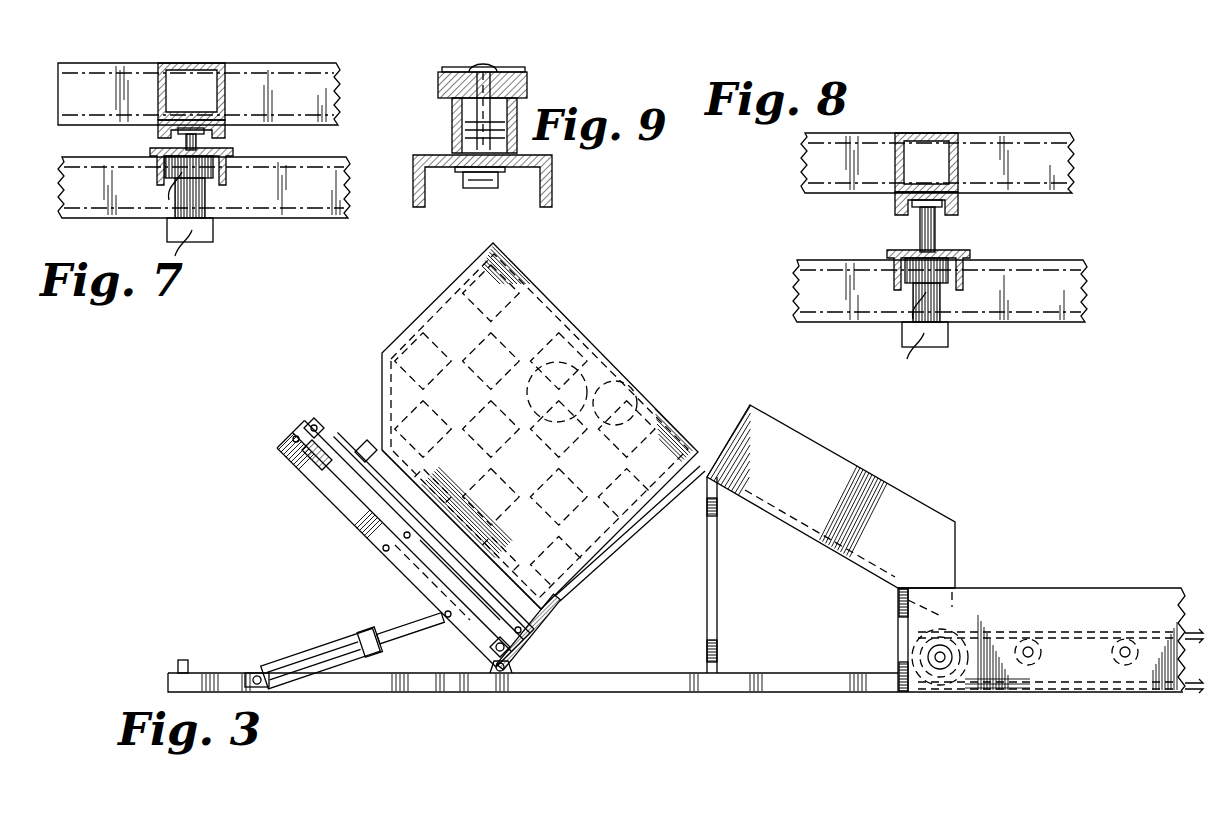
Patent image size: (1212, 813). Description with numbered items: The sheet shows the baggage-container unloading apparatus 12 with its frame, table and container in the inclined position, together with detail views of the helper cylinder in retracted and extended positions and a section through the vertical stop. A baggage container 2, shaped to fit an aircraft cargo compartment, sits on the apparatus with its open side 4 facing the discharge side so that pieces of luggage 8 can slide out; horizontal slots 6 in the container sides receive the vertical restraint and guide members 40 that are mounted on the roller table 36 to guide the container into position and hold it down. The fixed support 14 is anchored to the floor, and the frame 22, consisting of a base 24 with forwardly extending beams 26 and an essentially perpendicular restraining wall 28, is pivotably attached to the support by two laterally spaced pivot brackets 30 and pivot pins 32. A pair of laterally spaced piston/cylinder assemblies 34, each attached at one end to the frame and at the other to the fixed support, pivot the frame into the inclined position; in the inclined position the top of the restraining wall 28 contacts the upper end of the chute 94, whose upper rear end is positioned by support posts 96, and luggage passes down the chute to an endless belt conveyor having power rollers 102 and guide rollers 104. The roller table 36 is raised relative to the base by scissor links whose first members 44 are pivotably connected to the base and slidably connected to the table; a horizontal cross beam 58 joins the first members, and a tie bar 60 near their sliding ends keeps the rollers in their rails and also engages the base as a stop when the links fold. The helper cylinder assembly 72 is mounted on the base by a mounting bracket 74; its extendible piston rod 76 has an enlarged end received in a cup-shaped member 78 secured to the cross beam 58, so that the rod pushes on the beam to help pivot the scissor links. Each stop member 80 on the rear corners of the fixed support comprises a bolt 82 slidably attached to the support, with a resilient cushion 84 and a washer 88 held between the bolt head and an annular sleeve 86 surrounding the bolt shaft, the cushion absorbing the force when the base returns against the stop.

In FIG. 3, the baggage container 2 is at (560, 307).
In FIG. 3, the open side 4 is at (701, 455).
In FIG. 3, the horizontal slots 6 is at (560, 593).
In FIG. 3, the pieces of luggage 8 is at (380, 355).
In FIG. 3, the unloading apparatus 12 is at (190, 522).
In FIG. 9, the fixed support 14 is at (552, 175).
In FIG. 3, the fixed support 14 is at (362, 682).
In FIG. 3, the frame 22 is at (464, 564).
In FIG. 3, the base 24 is at (320, 480).
In FIG. 7, the beams 26 is at (316, 218).
In FIG. 8, the beams 26 is at (1040, 322).
In FIG. 3, the restraining wall 28 is at (628, 548).
In FIG. 3, the pivot brackets 30 is at (513, 668).
In FIG. 3, the pivot pins 32 is at (498, 672).
In FIG. 3, the piston/cylinder assemblies 34 is at (318, 650).
In FIG. 3, the roller table 36 is at (306, 420).
In FIG. 3, the vertical restraint and guide members 40 is at (364, 442).
In FIG. 3, the first member 44 is at (492, 652).
In FIG. 7, the cross beam 58 is at (185, 63).
In FIG. 8, the cross beam 58 is at (925, 133).
In FIG. 3, the tie bar 60 is at (300, 468).
In FIG. 7, the helper cylinder assembly 72 is at (207, 195).
In FIG. 8, the helper cylinder assembly 72 is at (940, 300).
In FIG. 7, the mounting bracket 74 is at (233, 176).
In FIG. 8, the mounting bracket 74 is at (970, 282).
In FIG. 7, the piston rod 76 is at (178, 178).
In FIG. 8, the piston rod 76 is at (920, 232).
In FIG. 7, the cup-shaped member 78 is at (160, 128).
In FIG. 8, the cup-shaped member 78 is at (958, 207).
In FIG. 9, the stop members 80 is at (541, 79).
In FIG. 3, the stop members 80 is at (178, 664).
In FIG. 9, the bolt 82 is at (483, 66).
In FIG. 9, the resilient cushion 84 is at (440, 85).
In FIG. 9, the annular sleeve 86 is at (452, 112).
In FIG. 9, the washer 88 is at (512, 72).
In FIG. 3, the chute 94 is at (857, 486).
In FIG. 3, the support posts 96 is at (717, 611).
In FIG. 3, the power rollers 102 is at (963, 643).
In FIG. 3, the guide rollers 104 is at (1130, 643).